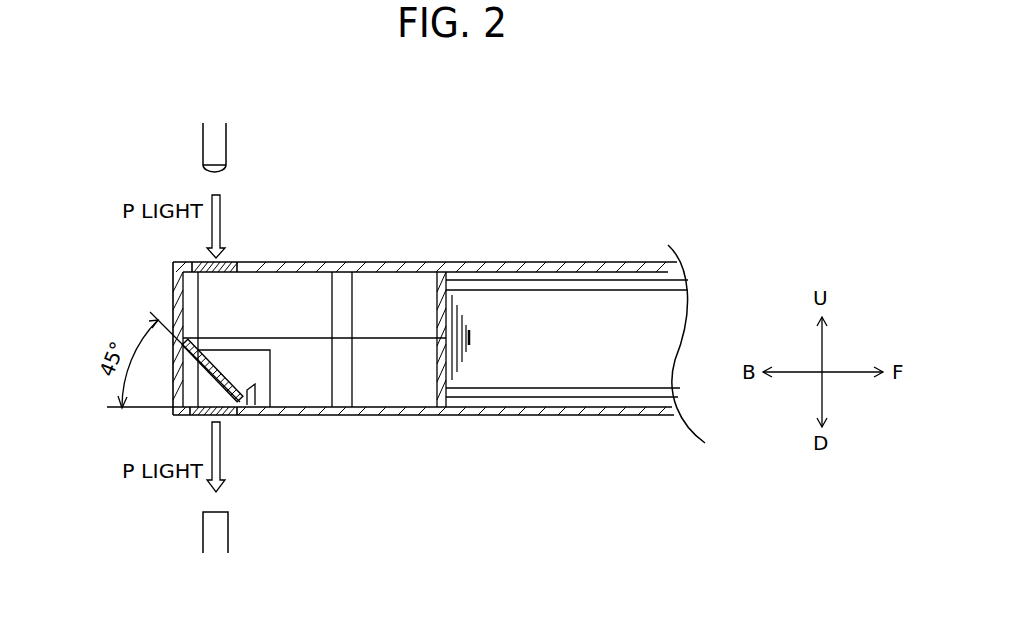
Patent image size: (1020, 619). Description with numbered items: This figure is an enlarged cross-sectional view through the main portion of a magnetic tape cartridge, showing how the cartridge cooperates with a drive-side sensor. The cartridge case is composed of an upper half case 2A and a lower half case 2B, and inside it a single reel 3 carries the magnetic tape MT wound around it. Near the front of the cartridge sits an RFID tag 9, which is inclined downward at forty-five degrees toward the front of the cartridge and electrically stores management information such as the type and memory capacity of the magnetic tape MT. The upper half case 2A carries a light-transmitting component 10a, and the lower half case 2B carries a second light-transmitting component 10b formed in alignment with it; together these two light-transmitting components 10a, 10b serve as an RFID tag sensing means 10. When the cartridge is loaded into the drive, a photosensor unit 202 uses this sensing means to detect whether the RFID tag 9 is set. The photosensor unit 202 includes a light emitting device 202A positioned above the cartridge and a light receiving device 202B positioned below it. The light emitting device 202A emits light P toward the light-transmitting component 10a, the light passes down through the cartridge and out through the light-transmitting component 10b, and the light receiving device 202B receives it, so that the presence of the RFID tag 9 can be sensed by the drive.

The upper half case 2A is at (585, 262).
The lower half case 2B is at (613, 415).
The single reel 3 is at (538, 285).
The magnetic tape MT is at (673, 303).
The RFID tag 9 is at (192, 386).
The RFID tag sensing means 10 is at (385, 342).
The light-transmitting component 10a is at (227, 258).
The light-transmitting component 10b is at (227, 417).
The photosensor unit 202 is at (415, 325).
The light emitting device 202A is at (410, 147).
The light receiving device 202B is at (228, 528).